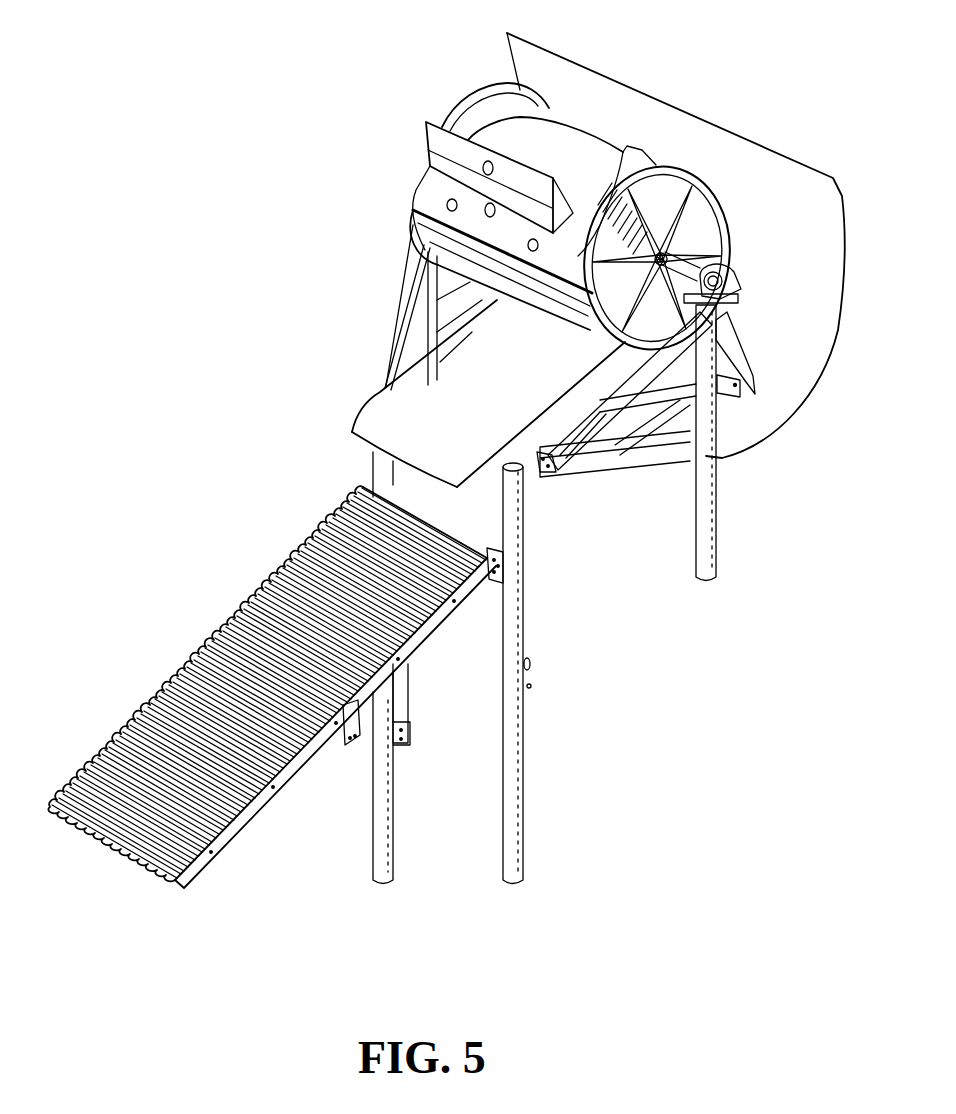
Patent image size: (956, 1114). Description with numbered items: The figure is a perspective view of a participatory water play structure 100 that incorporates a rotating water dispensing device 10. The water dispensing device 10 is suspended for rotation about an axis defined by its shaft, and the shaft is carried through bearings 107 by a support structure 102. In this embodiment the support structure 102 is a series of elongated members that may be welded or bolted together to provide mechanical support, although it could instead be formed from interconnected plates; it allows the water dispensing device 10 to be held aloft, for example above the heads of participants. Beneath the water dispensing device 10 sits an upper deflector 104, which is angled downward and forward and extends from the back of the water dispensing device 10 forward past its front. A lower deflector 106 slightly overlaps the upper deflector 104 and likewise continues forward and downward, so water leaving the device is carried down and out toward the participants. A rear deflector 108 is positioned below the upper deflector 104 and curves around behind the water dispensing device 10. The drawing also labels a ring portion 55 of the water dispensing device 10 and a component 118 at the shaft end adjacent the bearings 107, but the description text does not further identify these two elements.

The water dispensing device 10 is at (396, 100).
The drum rear ring 55 is at (494, 107).
The participatory water play structure 100 is at (203, 234).
The support structure 102 is at (618, 470).
The upper deflector 104 is at (420, 422).
The lower deflector 106 is at (248, 602).
The bearings 107 is at (706, 272).
The rear deflector 108 is at (817, 395).
The bearing 118 is at (724, 288).